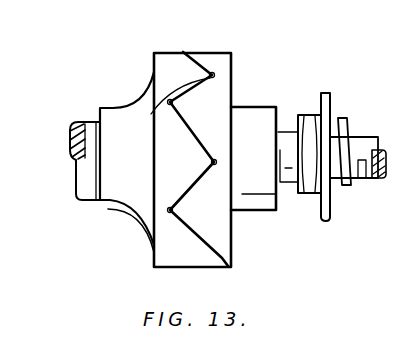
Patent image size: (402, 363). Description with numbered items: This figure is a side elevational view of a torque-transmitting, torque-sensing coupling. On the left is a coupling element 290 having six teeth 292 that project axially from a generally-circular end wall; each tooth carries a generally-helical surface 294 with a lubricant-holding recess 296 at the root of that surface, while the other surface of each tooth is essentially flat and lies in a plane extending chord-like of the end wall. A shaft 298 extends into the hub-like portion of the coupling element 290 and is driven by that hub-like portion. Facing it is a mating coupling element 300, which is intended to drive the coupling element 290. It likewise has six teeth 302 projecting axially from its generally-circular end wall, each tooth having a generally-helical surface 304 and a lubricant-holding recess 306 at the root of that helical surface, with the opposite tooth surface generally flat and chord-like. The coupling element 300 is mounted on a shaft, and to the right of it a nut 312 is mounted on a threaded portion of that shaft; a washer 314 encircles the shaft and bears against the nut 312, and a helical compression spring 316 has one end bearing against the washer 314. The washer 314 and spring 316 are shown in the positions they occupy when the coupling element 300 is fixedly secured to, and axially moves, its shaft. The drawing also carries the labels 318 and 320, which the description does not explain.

The coupling element 290 is at (128, 225).
The teeth 292 is at (188, 156).
The generally-helical surface 294 is at (214, 77).
The lubricant-holding recess 296 is at (181, 92).
The shaft 298 is at (77, 179).
The coupling element 300 is at (274, 213).
The teeth 302 is at (190, 108).
The generally-helical surface 304 is at (185, 190).
The lubricant-holding recess 306 is at (213, 74).
The nut 312 is at (311, 113).
The washer 314 is at (333, 103).
The helical compression spring 316 is at (353, 123).
The threaded shaft end 318 is at (375, 148).
The shaft 320 is at (397, 211).